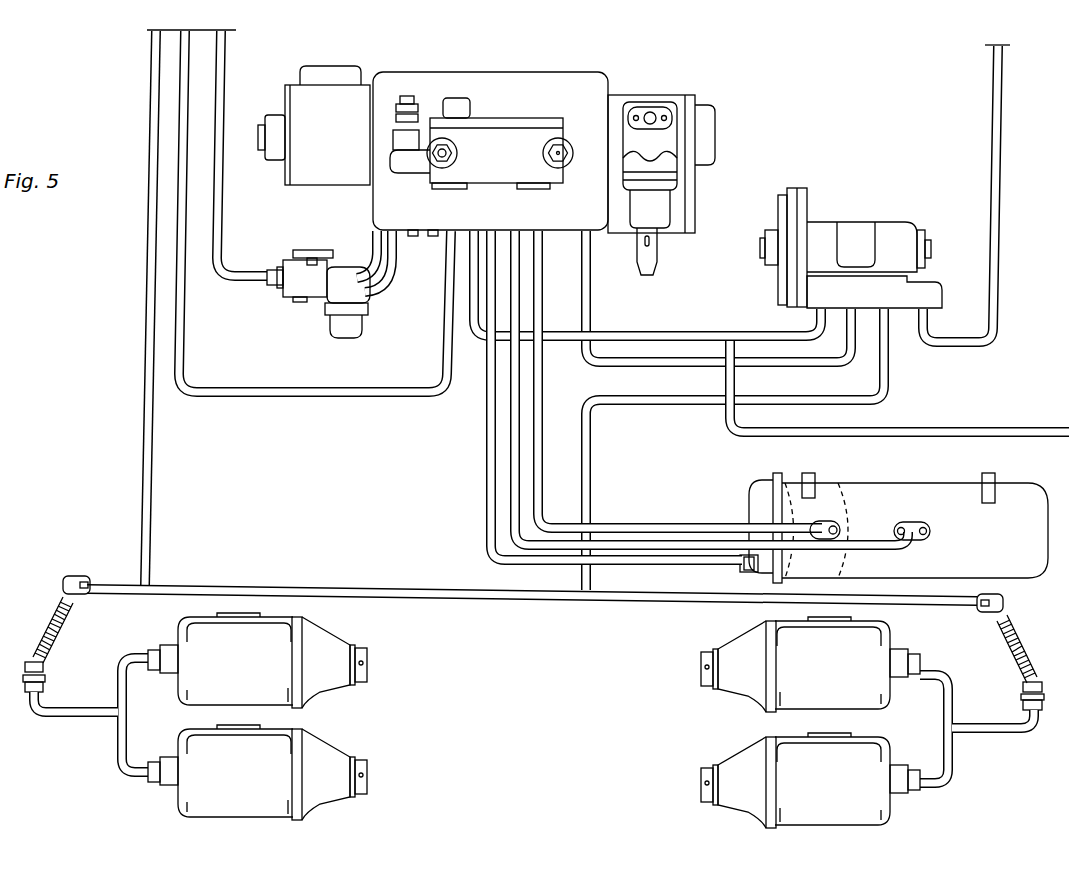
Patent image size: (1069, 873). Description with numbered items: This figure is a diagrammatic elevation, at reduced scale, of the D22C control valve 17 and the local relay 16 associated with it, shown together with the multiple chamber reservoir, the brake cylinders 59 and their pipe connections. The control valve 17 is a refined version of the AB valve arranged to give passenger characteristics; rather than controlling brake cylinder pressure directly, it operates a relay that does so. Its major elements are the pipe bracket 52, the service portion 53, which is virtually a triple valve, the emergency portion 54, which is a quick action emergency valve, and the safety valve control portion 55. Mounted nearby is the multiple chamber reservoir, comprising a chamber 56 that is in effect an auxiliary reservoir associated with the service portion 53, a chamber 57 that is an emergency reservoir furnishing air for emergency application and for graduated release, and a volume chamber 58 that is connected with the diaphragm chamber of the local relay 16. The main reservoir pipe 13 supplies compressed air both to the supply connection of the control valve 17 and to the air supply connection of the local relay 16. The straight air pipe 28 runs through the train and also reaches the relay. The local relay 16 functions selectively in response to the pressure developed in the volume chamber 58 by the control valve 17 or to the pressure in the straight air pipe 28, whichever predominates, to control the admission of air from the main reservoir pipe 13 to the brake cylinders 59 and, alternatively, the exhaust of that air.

The main reservoir pipe 13 is at (275, 392).
The local relay 16 is at (820, 228).
The control valve 17 is at (544, 159).
The straight air pipe 28 is at (623, 333).
The pipe bracket 52 is at (451, 78).
The service portion 53 is at (671, 97).
The emergency portion 54 is at (285, 92).
The safety valve control portion 55 is at (481, 142).
The chamber 56 is at (831, 490).
The chamber 57 is at (926, 490).
The volume chamber 58 is at (767, 493).
The brake cylinders 59 is at (312, 750).